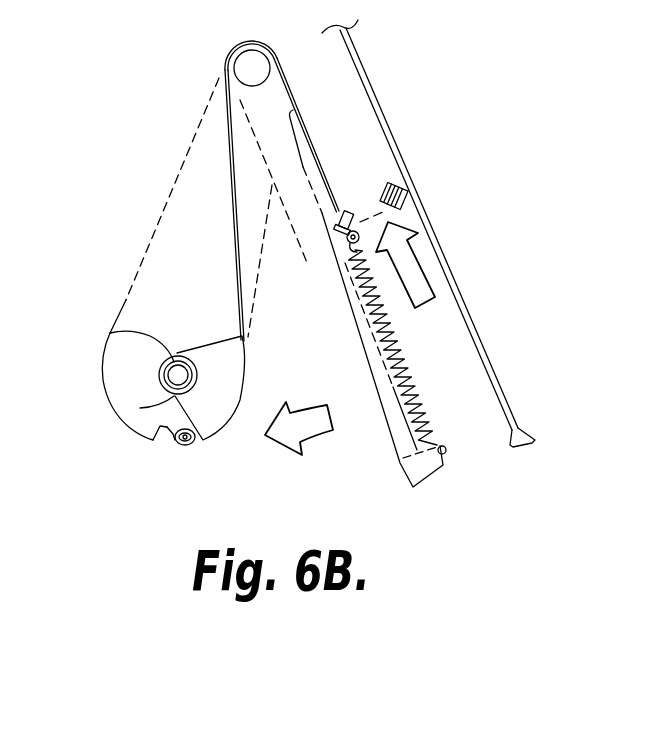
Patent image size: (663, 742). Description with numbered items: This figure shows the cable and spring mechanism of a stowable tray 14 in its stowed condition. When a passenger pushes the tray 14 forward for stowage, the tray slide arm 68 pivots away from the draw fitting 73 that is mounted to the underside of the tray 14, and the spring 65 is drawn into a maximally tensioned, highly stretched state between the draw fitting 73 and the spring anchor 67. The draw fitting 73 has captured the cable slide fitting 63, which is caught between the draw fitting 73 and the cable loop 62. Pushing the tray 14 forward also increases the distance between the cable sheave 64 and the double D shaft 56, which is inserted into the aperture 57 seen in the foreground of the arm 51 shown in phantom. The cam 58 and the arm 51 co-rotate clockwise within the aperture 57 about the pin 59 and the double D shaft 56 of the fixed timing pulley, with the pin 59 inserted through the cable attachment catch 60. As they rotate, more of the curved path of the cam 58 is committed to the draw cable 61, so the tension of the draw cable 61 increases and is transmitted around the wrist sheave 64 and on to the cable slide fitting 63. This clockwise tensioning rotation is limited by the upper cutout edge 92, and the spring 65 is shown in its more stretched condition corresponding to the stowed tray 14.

The tray 14 is at (500, 380).
The arm 51 is at (140, 262).
The double D shaft 56 is at (118, 333).
The aperture 57 is at (140, 408).
The cam 58 is at (247, 397).
The pin 59 is at (171, 449).
The cable attachment catch 60 is at (190, 448).
The draw cable 61 is at (227, 173).
The cable loop 62 is at (347, 231).
The cable slide fitting 63 is at (348, 208).
The cable sheave 64 is at (230, 59).
The spring 65 is at (415, 387).
The spring anchor 67 is at (447, 450).
The tray slide arm 68 is at (338, 333).
The draw fitting 73 is at (405, 190).
The upper cutout edge 92 is at (161, 437).